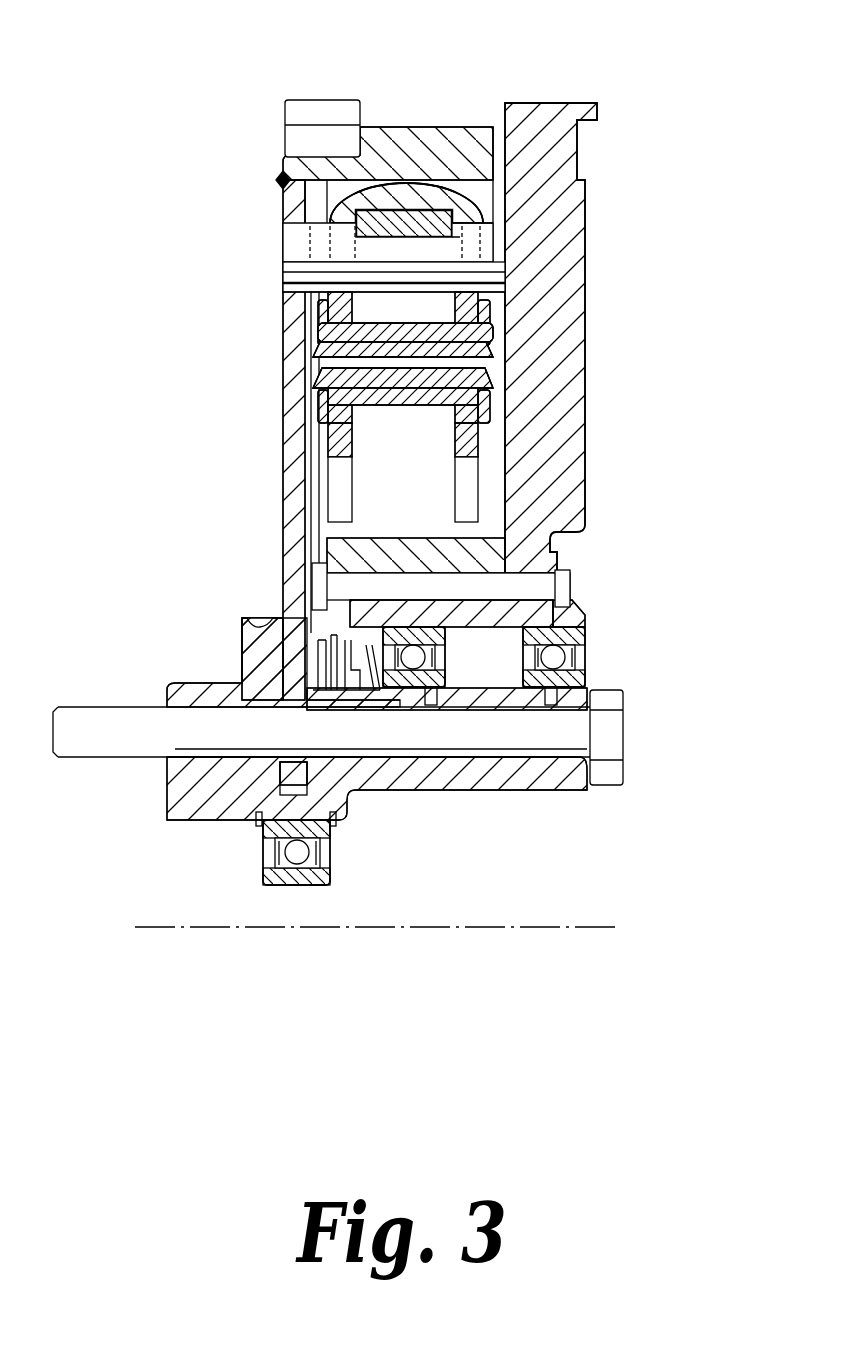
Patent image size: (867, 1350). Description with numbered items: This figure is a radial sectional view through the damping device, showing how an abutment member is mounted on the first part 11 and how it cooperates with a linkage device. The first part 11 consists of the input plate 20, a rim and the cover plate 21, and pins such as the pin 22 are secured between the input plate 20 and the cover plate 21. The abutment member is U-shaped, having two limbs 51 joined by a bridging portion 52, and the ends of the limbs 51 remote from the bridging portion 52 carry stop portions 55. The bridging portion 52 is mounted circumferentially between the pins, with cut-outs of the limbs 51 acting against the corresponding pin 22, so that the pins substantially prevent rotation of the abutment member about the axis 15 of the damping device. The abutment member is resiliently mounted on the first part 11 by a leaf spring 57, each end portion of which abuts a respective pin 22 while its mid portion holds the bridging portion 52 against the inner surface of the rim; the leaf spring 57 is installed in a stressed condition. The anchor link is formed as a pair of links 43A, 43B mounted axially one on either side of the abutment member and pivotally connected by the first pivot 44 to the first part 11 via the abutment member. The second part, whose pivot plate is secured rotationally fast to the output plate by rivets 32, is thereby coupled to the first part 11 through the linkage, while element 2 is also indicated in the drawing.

The mounting block 2 is at (305, 110).
The first part 11 is at (292, 330).
The axis 15 is at (292, 928).
The input plate 20 is at (300, 547).
The cover plate 21 is at (505, 117).
The pin 22 is at (295, 247).
The rivets 32 is at (555, 592).
The link 43A is at (333, 407).
The link 43B is at (490, 390).
The first pivot 44 is at (475, 352).
The limbs 51 is at (340, 443).
The bridging portion 52 is at (405, 193).
The stop portions 55 is at (345, 485).
The leaf spring 57 is at (448, 218).